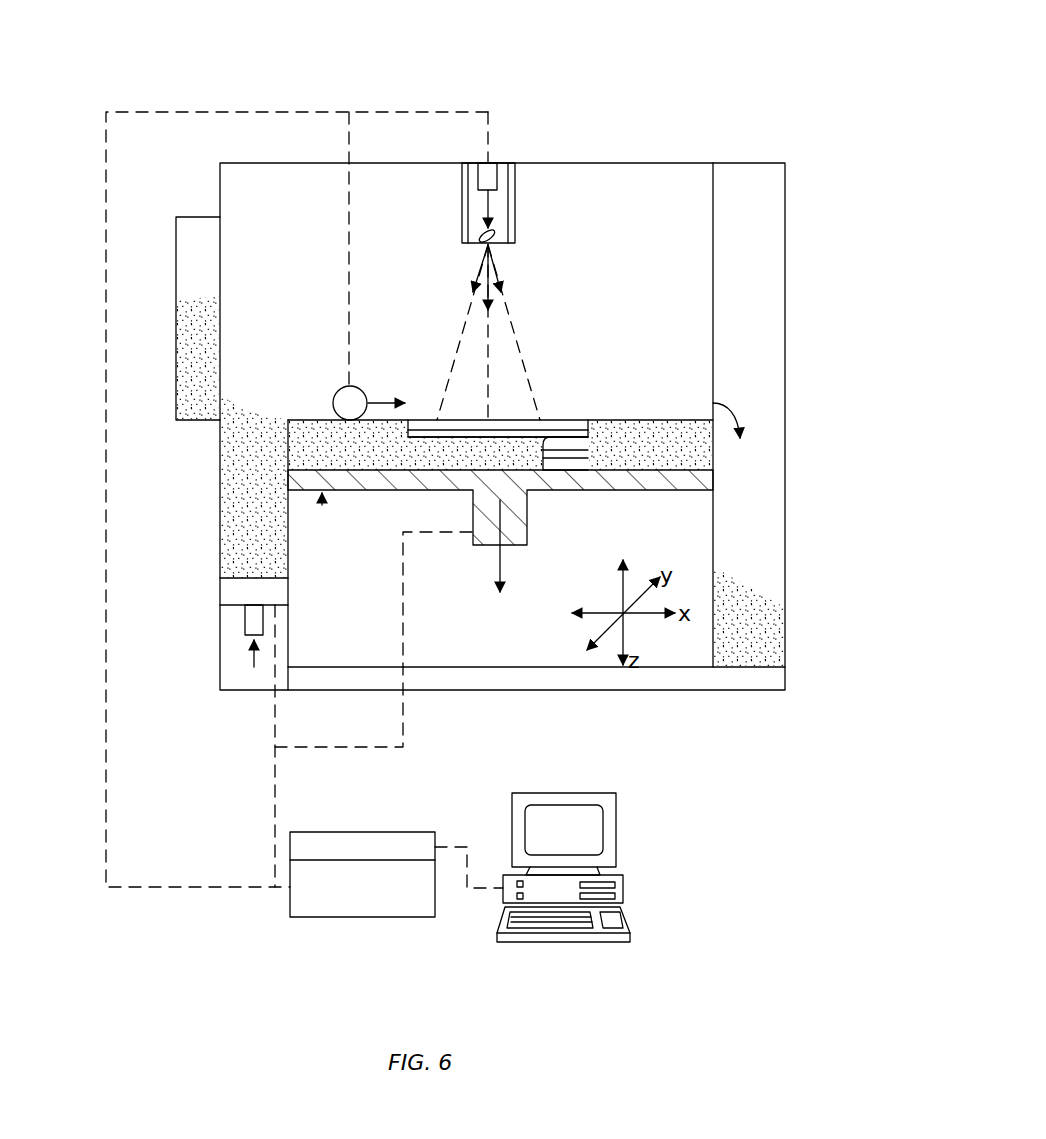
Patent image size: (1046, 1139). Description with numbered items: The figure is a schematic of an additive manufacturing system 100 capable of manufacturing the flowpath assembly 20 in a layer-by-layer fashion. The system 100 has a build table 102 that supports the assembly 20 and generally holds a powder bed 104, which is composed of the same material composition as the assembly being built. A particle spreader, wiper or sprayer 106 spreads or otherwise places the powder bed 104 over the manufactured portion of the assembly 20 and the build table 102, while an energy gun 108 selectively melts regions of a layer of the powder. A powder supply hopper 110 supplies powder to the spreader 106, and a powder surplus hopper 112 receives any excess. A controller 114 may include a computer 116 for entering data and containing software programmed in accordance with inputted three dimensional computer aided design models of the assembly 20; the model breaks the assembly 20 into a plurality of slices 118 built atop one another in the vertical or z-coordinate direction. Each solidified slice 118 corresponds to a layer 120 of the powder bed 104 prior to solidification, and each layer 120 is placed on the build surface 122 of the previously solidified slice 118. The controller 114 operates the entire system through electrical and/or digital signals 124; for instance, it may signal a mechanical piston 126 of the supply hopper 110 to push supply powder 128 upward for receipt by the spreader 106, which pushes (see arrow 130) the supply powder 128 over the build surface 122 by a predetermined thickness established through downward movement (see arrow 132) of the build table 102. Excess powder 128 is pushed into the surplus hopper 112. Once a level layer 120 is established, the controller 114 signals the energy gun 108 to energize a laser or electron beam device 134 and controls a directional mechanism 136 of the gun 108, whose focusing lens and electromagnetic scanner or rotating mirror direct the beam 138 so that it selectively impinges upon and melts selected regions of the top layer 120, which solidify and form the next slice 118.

The additive manufacturing system 100 is at (707, 88).
The build table 102 is at (600, 494).
The powder bed 104 is at (655, 432).
The particle spreader 106 is at (340, 390).
The energy gun 108 is at (522, 195).
The powder supply hopper 110 is at (210, 266).
The powder surplus hopper 112 is at (770, 553).
The controller 114 is at (272, 907).
The computer 116 is at (616, 818).
The slice 118 is at (580, 432).
The layer 120 is at (680, 425).
The build surface 122 is at (505, 430).
The signals 124 is at (265, 110).
The mechanical piston 126 is at (237, 590).
The supply powder 128 is at (229, 400).
The arrow 130 is at (378, 398).
The arrow 132 is at (504, 580).
The laser or electron beam device 134 is at (490, 163).
The directional mechanism 136 is at (500, 256).
The energy beam 138 is at (478, 283).
The flowpath assembly 20 is at (553, 440).